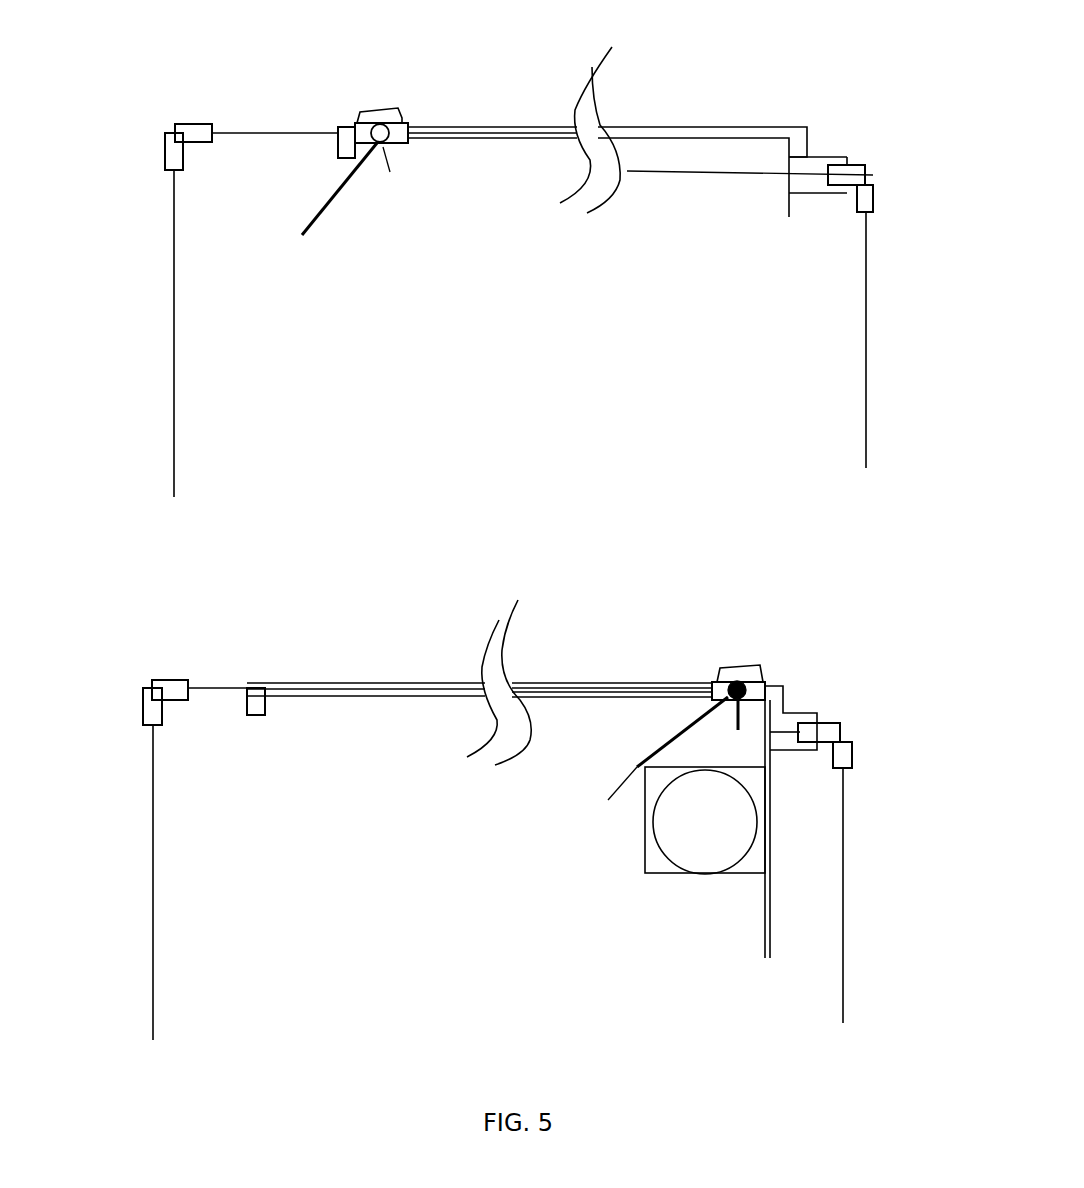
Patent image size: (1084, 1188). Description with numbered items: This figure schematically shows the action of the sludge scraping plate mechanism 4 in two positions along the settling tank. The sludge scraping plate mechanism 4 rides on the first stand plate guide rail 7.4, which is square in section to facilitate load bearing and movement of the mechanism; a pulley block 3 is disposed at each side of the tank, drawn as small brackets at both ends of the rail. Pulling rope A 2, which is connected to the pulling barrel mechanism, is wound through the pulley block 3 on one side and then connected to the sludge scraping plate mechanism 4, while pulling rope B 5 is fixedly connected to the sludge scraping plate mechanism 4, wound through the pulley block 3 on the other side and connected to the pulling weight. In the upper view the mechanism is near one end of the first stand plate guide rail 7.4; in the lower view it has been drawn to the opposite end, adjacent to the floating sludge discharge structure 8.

The pulling rope A 2 is at (900, 612).
The pulley block 3 is at (496, 411).
The sludge scraping plate mechanism 4 is at (509, 404).
The pulling rope B 5 is at (109, 605).
The first stand plate guide rail 7.4 is at (509, 406).
The floating sludge discharge structure 8 is at (796, 883).